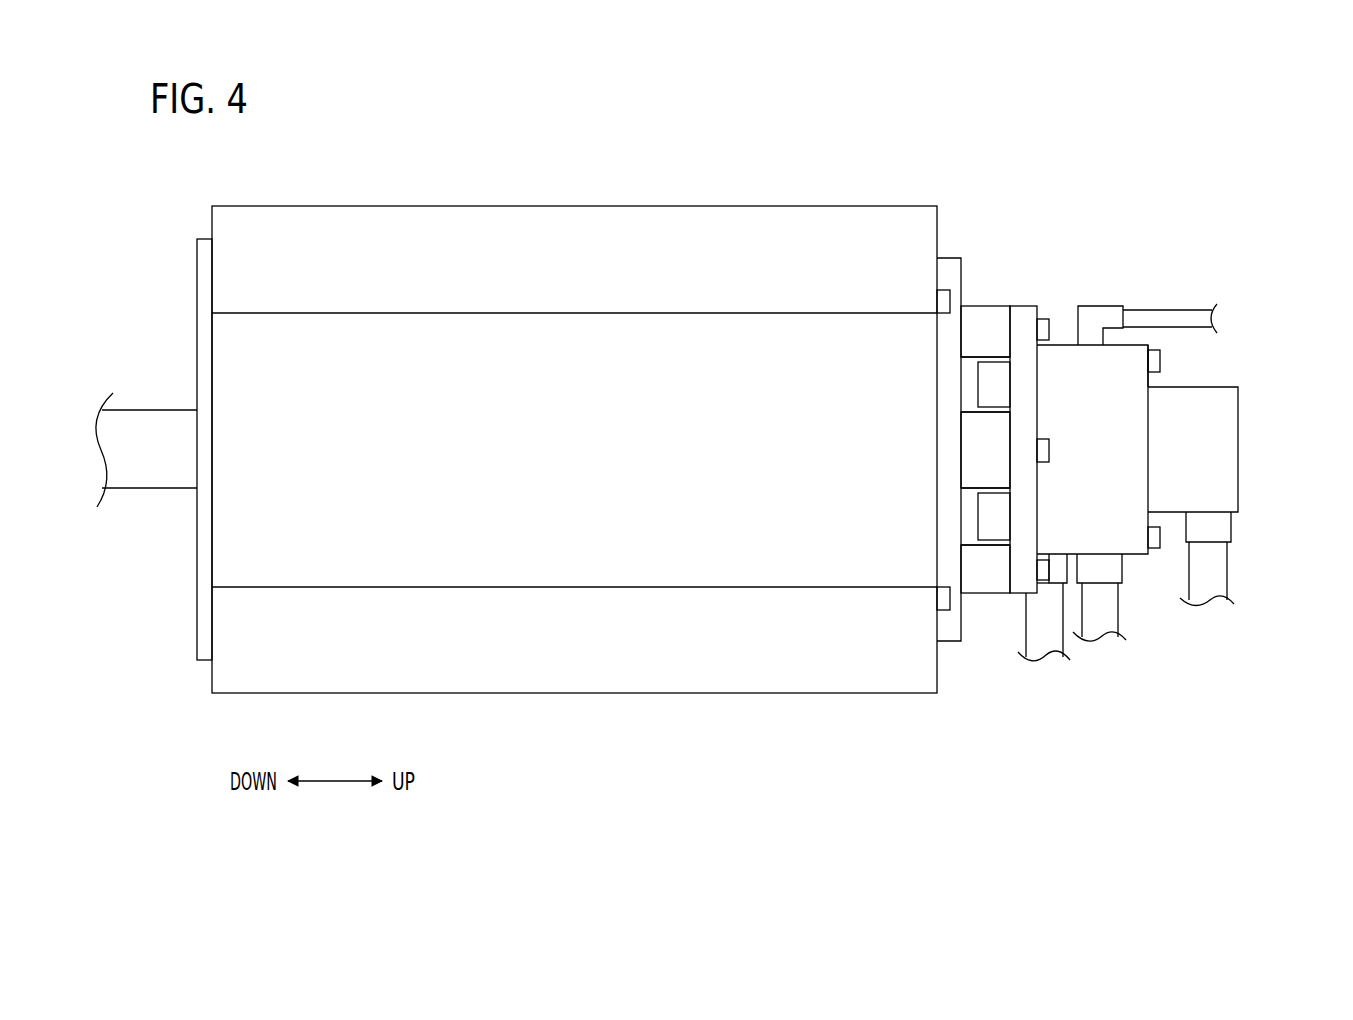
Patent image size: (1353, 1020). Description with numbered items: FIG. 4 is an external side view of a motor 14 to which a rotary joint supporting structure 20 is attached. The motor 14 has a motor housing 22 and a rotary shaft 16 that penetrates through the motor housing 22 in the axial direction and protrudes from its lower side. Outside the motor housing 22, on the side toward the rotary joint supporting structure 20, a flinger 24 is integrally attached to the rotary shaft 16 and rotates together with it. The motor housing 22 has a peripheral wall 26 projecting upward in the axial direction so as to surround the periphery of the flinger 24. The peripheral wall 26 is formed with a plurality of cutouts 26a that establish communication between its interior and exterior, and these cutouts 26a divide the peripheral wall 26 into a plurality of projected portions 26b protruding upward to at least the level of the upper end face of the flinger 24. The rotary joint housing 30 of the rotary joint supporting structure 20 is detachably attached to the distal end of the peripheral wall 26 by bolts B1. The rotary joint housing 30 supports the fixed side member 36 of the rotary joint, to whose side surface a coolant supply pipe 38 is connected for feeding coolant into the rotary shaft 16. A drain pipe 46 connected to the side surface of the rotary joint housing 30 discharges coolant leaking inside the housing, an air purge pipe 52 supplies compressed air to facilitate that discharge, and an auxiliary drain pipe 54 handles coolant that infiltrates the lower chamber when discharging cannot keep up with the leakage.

The motor 14 is at (581, 189).
The rotary shaft 16 is at (148, 410).
The rotary joint supporting structure 20 is at (1154, 296).
The motor housing 22 is at (686, 206).
The flinger 24 is at (988, 523).
The peripheral wall 26 is at (958, 460).
The cutouts 26a is at (975, 383).
The projected portions 26b is at (981, 320).
The rotary joint housing 30 is at (1125, 364).
The fixed side member 36 is at (1242, 444).
The coolant supply pipe 38 is at (1210, 573).
The drain pipe 46 is at (1107, 608).
The air purge pipe 52 is at (1188, 308).
The auxiliary drain pipe 54 is at (1047, 645).
The bolts B1 is at (1046, 319).